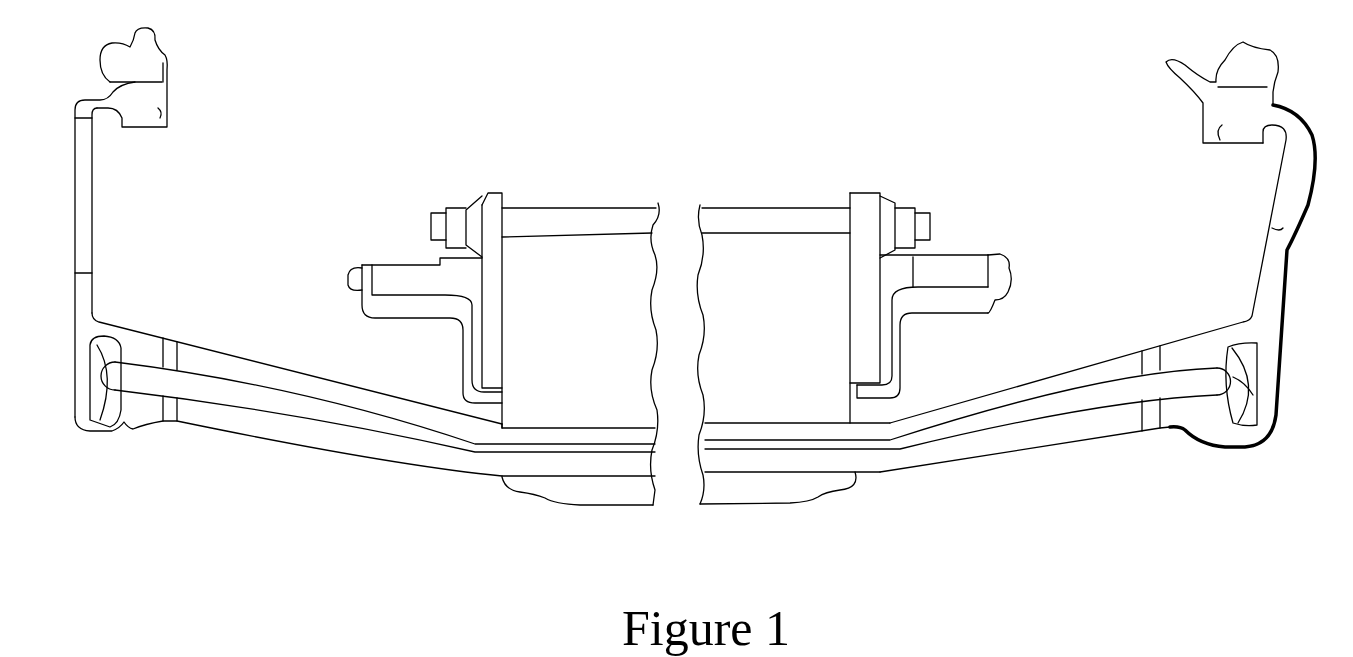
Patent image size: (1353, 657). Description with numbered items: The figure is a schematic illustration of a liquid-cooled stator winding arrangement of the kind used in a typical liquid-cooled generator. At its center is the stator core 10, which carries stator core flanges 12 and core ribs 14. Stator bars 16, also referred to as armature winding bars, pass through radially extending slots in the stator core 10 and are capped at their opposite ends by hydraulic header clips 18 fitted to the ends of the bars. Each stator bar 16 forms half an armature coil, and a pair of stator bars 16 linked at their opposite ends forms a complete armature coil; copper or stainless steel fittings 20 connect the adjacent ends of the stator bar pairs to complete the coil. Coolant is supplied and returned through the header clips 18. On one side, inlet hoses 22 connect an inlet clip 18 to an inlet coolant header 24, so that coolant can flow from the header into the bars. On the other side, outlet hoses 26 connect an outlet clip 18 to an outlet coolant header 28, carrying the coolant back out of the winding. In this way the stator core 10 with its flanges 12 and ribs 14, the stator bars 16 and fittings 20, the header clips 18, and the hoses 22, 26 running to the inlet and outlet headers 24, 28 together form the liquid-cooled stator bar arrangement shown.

The stator core 10 is at (728, 490).
The stator core flanges 12 is at (495, 203).
The core ribs 14 is at (775, 206).
The stator bars 16 is at (280, 368).
The hydraulic header clips 18 is at (170, 338).
The fittings 20 is at (122, 406).
The inlet hoses 22 is at (1288, 223).
The inlet coolant header 24 is at (1220, 125).
The outlet hoses 26 is at (75, 222).
The outlet coolant header 28 is at (168, 113).